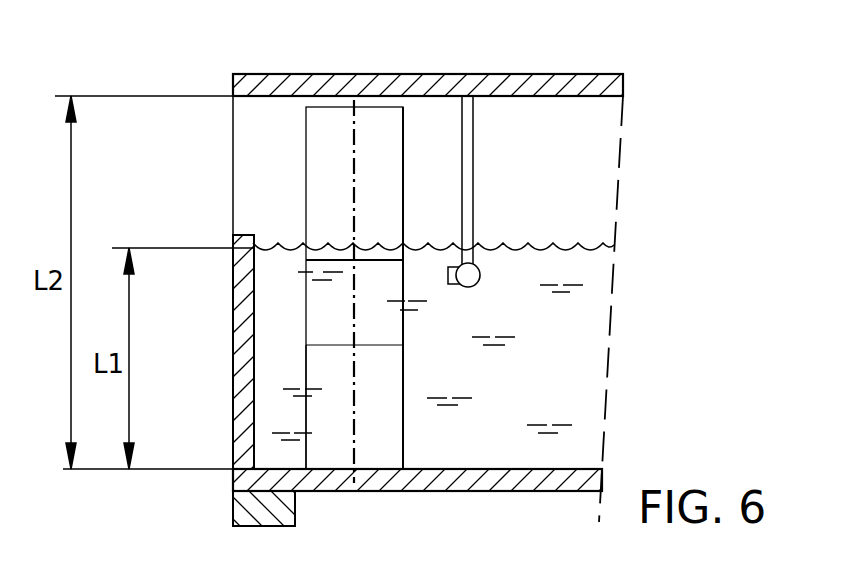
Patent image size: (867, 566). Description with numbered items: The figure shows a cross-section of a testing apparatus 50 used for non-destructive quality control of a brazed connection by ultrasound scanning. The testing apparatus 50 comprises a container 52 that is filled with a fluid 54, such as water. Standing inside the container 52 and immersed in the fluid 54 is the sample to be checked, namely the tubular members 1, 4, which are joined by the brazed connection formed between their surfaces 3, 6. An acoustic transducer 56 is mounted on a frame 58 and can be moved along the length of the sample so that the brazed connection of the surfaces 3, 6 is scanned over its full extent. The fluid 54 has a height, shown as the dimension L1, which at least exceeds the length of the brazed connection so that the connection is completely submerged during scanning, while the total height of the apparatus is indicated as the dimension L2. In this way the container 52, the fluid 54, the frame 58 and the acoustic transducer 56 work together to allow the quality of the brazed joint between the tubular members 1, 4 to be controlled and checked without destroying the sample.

The tubular member 1 is at (284, 333).
The brazed surface 3 is at (284, 302).
The brazed surface 6 is at (328, 306).
The tubular member 4 is at (333, 440).
The testing apparatus 50 is at (499, 288).
The container 52 is at (450, 483).
The fluid 54 is at (600, 296).
The acoustic transducer 56 is at (470, 312).
The frame 58 is at (585, 76).